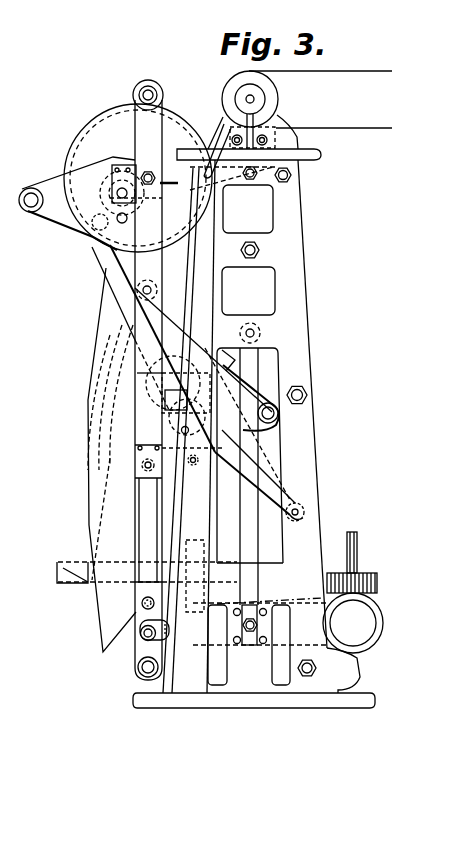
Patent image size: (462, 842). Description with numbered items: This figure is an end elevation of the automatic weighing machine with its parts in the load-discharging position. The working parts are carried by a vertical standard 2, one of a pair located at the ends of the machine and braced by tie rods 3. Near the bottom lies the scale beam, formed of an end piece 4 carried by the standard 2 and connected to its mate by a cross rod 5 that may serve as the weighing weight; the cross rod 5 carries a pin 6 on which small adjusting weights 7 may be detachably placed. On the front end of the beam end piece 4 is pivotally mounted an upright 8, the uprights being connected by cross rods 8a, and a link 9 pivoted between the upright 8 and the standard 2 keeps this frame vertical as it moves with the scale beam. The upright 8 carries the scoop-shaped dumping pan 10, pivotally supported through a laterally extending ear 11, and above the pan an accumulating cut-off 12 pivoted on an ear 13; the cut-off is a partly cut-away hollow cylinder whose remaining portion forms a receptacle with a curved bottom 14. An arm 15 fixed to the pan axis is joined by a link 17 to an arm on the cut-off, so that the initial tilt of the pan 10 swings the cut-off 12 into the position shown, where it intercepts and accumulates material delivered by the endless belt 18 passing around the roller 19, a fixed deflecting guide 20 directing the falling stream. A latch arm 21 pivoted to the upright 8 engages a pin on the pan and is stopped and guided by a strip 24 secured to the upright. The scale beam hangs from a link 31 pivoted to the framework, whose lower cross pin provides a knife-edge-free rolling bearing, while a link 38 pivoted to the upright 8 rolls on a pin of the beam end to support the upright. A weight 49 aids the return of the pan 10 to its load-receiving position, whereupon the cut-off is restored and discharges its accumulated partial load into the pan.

The vertical standard 2 is at (293, 266).
The tie rod 3 is at (260, 250).
The scale beam end piece 4 is at (167, 636).
The cross rod 5 is at (362, 613).
The pin 6 is at (356, 535).
The adjusting weight 7 is at (373, 578).
The upright 8 is at (147, 120).
The cross rod 8a is at (161, 91).
The link 9 is at (184, 184).
The dumping pan 10 is at (100, 475).
The ear 11 is at (213, 453).
The cut-off 12 is at (138, 178).
The ear 13 is at (52, 183).
The curved bottom 14 is at (186, 272).
The arm 15 is at (250, 472).
The link 17 is at (112, 262).
The endless belt 18 is at (368, 72).
The roller 19 is at (267, 98).
The deflecting guide 20 is at (225, 130).
The arm 21 is at (80, 544).
The strip 24 is at (67, 582).
The link 31 is at (248, 528).
The link 38 is at (140, 547).
The weight 49 is at (227, 360).